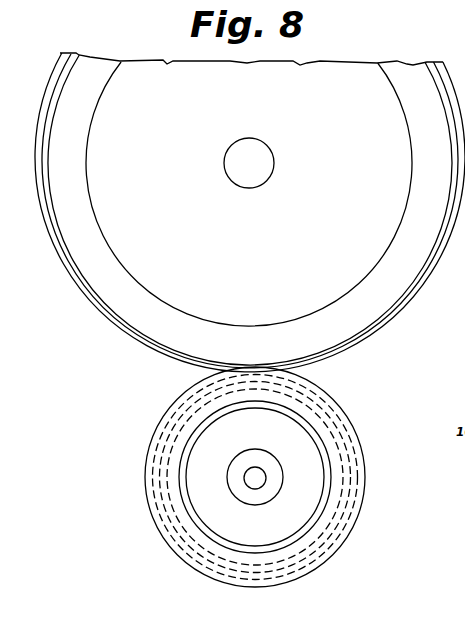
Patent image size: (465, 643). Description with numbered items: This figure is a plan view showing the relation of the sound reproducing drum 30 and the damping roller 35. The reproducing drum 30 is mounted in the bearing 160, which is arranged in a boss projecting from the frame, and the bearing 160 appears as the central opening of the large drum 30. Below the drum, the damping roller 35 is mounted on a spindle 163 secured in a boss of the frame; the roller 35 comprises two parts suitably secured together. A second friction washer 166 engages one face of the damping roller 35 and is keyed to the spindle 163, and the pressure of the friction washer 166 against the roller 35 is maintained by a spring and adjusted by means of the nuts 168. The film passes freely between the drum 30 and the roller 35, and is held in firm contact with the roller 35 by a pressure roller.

The sound reproducing drum 30 is at (250, 212).
The bearing 160 is at (255, 182).
The damping roller 35 is at (337, 487).
The second friction washer 166 is at (255, 477).
The nut 168 is at (255, 477).
The spindle 163 is at (253, 485).